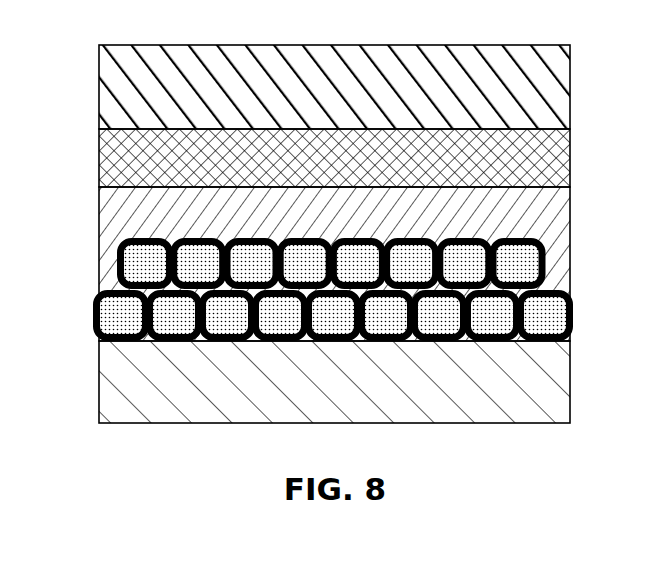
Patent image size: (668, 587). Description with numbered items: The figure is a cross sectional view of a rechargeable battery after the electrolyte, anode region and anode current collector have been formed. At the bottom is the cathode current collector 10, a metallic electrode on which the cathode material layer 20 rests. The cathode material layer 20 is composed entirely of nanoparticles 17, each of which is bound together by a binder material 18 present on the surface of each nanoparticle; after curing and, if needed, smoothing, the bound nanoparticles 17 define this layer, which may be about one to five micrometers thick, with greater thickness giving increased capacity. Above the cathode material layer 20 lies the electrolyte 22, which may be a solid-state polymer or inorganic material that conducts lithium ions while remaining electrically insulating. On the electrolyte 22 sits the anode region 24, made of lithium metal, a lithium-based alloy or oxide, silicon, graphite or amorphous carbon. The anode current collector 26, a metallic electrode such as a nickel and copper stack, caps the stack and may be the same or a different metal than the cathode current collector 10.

The cathode current collector 10 is at (318, 398).
The nanoparticles 17 is at (200, 258).
The binder material 18 is at (495, 240).
The cathode material layer 20 is at (344, 239).
The electrolyte 22 is at (349, 223).
The anode region 24 is at (317, 176).
The anode current collector 26 is at (317, 103).